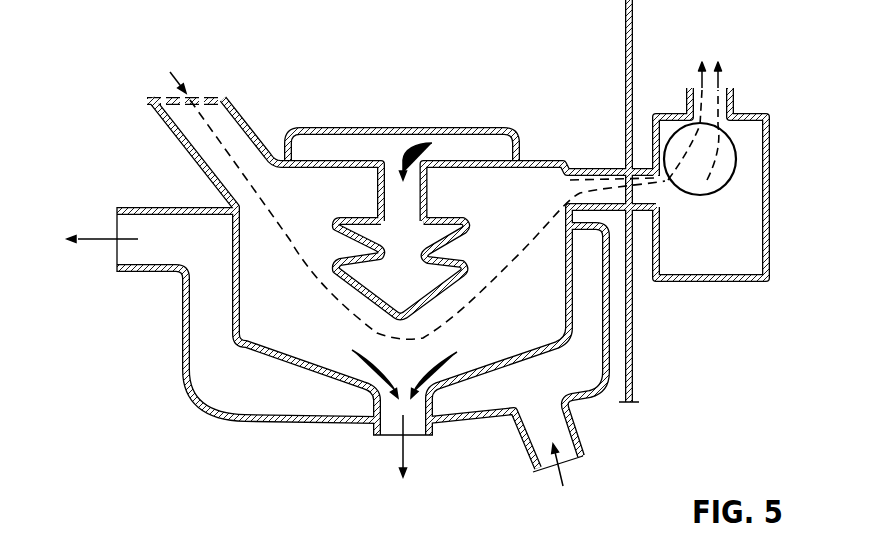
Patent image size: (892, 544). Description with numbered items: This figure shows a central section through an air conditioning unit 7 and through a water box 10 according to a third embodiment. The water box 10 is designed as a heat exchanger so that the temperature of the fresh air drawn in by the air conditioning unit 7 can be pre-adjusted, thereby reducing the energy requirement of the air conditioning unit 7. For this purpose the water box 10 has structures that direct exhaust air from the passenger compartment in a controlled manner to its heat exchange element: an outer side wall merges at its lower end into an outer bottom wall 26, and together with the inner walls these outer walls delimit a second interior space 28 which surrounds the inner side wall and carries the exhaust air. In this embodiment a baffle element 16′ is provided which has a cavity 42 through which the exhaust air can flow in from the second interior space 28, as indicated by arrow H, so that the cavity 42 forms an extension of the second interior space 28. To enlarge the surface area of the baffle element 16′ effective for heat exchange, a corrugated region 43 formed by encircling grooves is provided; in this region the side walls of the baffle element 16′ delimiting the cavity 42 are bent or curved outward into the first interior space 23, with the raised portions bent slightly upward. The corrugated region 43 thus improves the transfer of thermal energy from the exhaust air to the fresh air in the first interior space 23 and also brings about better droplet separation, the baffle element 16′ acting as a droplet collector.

The air conditioning unit 7 is at (728, 307).
The water box 10 is at (189, 397).
The baffle element 16′ is at (380, 190).
The first interior space 23 is at (263, 315).
The outer bottom wall 26 is at (470, 417).
The second interior space 28 is at (480, 150).
The cavity 42 is at (416, 252).
The corrugated region 43 is at (465, 228).
The arrow H is at (432, 143).